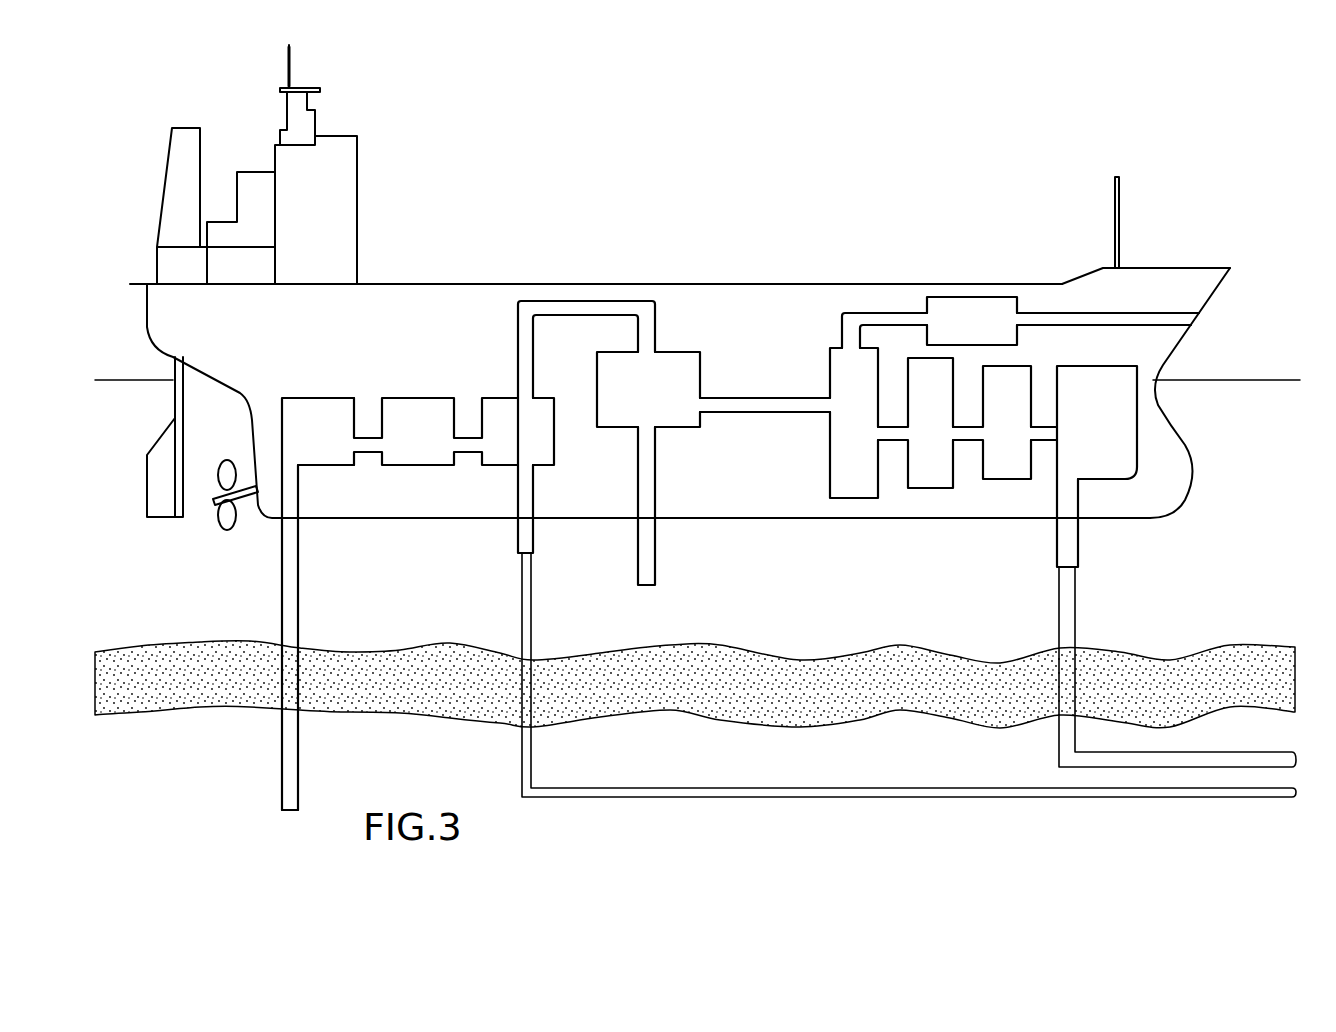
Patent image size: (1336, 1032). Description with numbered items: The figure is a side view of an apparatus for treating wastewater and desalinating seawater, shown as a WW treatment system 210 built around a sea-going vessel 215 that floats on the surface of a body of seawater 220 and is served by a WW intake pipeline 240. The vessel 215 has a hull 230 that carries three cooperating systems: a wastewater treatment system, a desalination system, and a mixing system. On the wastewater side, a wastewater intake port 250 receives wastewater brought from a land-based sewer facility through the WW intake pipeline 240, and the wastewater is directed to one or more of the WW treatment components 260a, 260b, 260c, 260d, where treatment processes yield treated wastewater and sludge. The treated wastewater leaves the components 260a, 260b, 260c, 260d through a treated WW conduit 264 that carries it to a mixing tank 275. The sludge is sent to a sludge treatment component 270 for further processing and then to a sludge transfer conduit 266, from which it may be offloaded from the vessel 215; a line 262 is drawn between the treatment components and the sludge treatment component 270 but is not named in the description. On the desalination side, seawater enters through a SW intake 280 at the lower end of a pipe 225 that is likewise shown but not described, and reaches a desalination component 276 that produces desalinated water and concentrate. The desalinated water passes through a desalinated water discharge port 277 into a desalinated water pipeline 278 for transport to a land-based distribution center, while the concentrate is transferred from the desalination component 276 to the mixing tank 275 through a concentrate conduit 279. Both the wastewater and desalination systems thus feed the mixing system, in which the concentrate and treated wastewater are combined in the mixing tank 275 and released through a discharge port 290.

The WW treatment system 210 is at (510, 170).
The sea-going vessel 215 is at (1199, 254).
The sea water 220 is at (1258, 545).
The riser / intake pipe 225 is at (254, 665).
The hull 230 is at (438, 302).
The WW intake pipeline 240 is at (1057, 748).
The wastewater intake port 250 is at (1057, 553).
The WW treatment component 260a is at (1138, 428).
The WW treatment component 260b is at (1022, 365).
The WW treatment component 260c is at (913, 358).
The WW treatment component 260d is at (830, 372).
The tank vapor line 262 is at (840, 317).
The treated WW conduit 264 is at (762, 413).
The sludge transfer conduit 266 is at (1167, 313).
The sludge treatment component 270 is at (955, 297).
The mixing tank 275 is at (612, 428).
The desalination component 276 is at (514, 380).
The desalinated water discharge port 277 is at (518, 538).
The desalinated water pipeline 278 is at (533, 590).
The concentrate conduit 279 is at (585, 301).
The SW intake 280 is at (285, 812).
The discharge port 290 is at (650, 586).